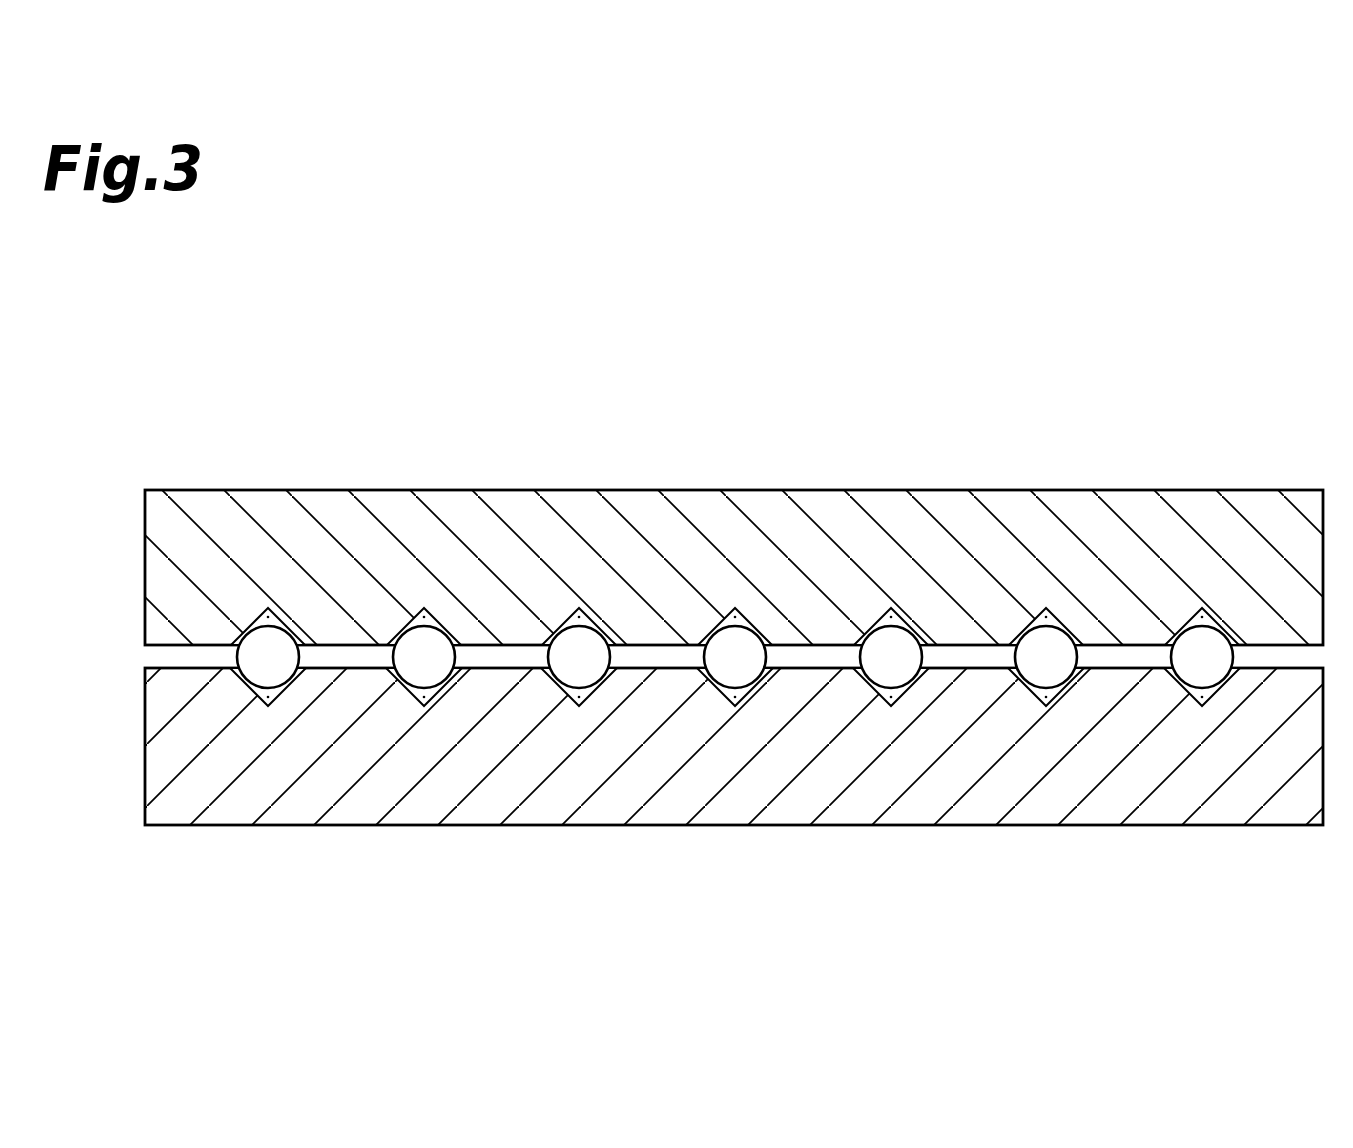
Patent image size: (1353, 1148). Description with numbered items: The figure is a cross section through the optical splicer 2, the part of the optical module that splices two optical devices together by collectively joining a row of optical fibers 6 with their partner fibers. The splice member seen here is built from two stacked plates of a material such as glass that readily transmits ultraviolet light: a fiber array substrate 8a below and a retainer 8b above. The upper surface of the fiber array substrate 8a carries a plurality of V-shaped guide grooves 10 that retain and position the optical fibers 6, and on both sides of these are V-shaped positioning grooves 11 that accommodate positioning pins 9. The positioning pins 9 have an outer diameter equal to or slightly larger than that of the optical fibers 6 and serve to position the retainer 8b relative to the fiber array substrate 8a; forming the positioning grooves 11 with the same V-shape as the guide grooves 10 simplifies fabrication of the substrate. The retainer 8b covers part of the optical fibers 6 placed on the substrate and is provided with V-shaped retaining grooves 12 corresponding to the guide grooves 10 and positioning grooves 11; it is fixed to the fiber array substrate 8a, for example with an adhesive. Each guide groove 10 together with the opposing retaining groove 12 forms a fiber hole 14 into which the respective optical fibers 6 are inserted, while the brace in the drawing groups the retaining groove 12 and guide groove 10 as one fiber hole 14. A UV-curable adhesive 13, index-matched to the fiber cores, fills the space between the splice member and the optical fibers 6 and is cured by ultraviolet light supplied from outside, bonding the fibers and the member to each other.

The optical splicer 2 is at (734, 634).
The optical fiber 6 is at (429, 665).
The fiber array substrate 8a is at (772, 803).
The retainer 8b is at (735, 505).
The positioning pin 9 is at (277, 663).
The guide groove 10 is at (1050, 698).
The positioning groove 11 is at (245, 687).
The retaining groove 12 is at (1034, 613).
The UV-curable adhesive 13 is at (424, 608).
The fiber hole 14 is at (1055, 939).